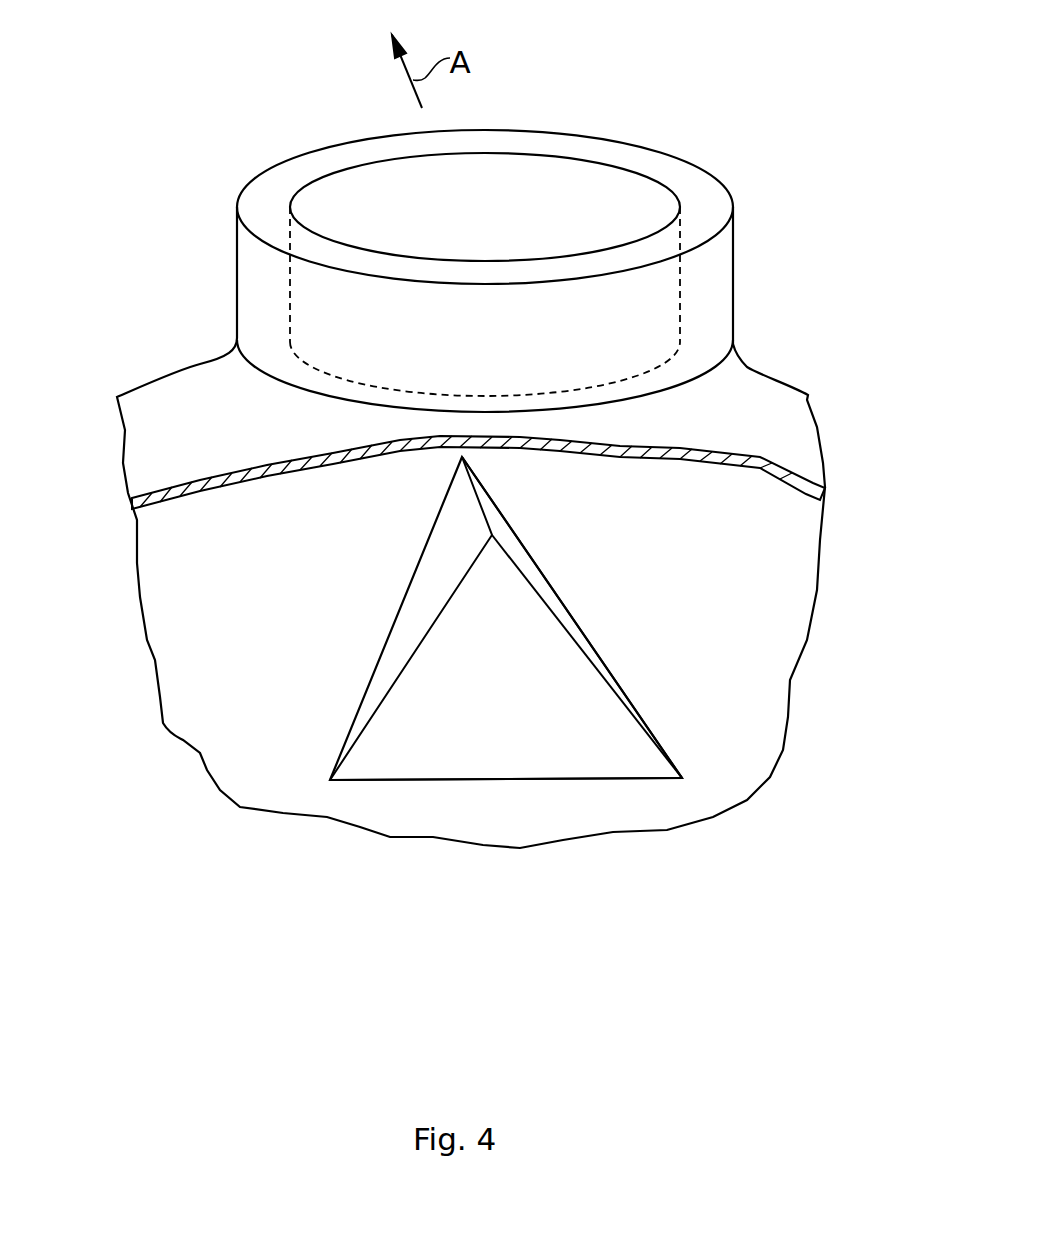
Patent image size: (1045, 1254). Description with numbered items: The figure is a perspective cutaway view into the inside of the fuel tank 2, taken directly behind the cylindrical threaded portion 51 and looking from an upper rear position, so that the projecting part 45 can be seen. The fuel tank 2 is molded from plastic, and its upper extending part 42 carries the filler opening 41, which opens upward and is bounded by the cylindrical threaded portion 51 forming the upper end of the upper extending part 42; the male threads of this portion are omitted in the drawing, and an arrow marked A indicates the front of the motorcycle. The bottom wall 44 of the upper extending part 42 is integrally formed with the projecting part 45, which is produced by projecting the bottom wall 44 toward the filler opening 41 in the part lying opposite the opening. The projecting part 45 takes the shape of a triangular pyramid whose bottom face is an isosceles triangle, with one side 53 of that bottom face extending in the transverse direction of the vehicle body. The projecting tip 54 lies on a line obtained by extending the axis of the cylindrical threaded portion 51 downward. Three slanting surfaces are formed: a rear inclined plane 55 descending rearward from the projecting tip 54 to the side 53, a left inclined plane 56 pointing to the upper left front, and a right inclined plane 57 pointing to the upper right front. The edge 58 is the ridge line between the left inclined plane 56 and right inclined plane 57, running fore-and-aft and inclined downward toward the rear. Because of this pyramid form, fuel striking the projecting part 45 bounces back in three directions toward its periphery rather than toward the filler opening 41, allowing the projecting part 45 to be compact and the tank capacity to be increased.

The fuel tank 2 is at (793, 387).
The filler opening 41 is at (558, 193).
The upper extending part 42 is at (728, 390).
The bottom wall 44 is at (725, 743).
The projecting part 45 is at (377, 650).
The cylindrical threaded portion 51 is at (703, 170).
The one side of the bottom face 53 is at (502, 780).
The projecting tip 54 is at (493, 537).
The rear inclined plane 55 is at (582, 752).
The left inclined plane 56 is at (447, 557).
The right inclined plane 57 is at (533, 573).
The edge 58 is at (487, 510).